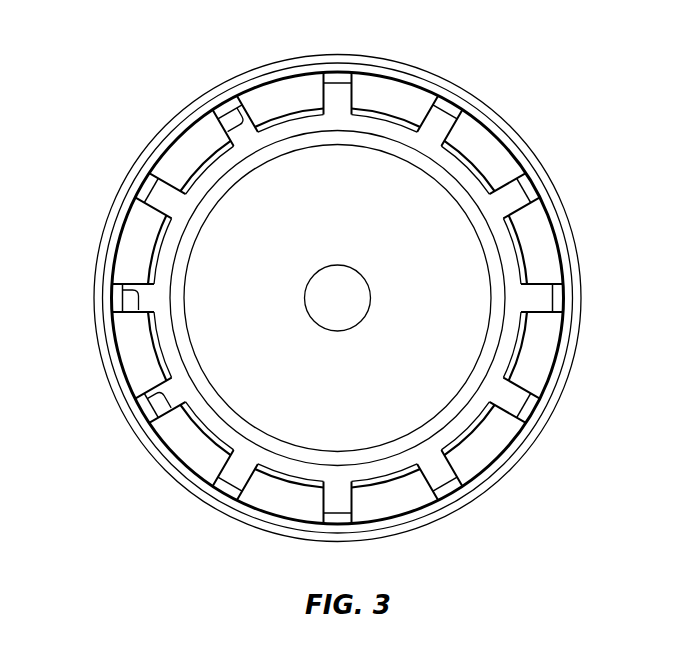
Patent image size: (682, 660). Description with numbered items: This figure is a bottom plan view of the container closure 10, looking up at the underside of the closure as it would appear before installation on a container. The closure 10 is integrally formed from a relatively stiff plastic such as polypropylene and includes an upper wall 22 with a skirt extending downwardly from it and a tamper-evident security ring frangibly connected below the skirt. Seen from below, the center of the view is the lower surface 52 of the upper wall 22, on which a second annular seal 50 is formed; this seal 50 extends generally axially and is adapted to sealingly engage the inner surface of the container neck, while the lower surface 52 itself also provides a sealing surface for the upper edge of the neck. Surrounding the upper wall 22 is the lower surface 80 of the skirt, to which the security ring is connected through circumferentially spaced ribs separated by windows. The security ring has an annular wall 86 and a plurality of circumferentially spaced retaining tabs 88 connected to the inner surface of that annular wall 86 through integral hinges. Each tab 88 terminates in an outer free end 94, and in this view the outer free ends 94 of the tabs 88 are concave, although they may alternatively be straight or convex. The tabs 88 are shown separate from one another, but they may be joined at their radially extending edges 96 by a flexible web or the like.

The closure 10 is at (546, 110).
The upper wall 22 is at (407, 182).
The second annular seal 50 is at (497, 271).
The lower surface 52 is at (352, 227).
The lower surface 80 is at (560, 212).
The annular wall 86 is at (528, 185).
The retaining tabs 88 is at (547, 353).
The outer free end 94 is at (488, 178).
The radially extending edges 96 is at (160, 402).